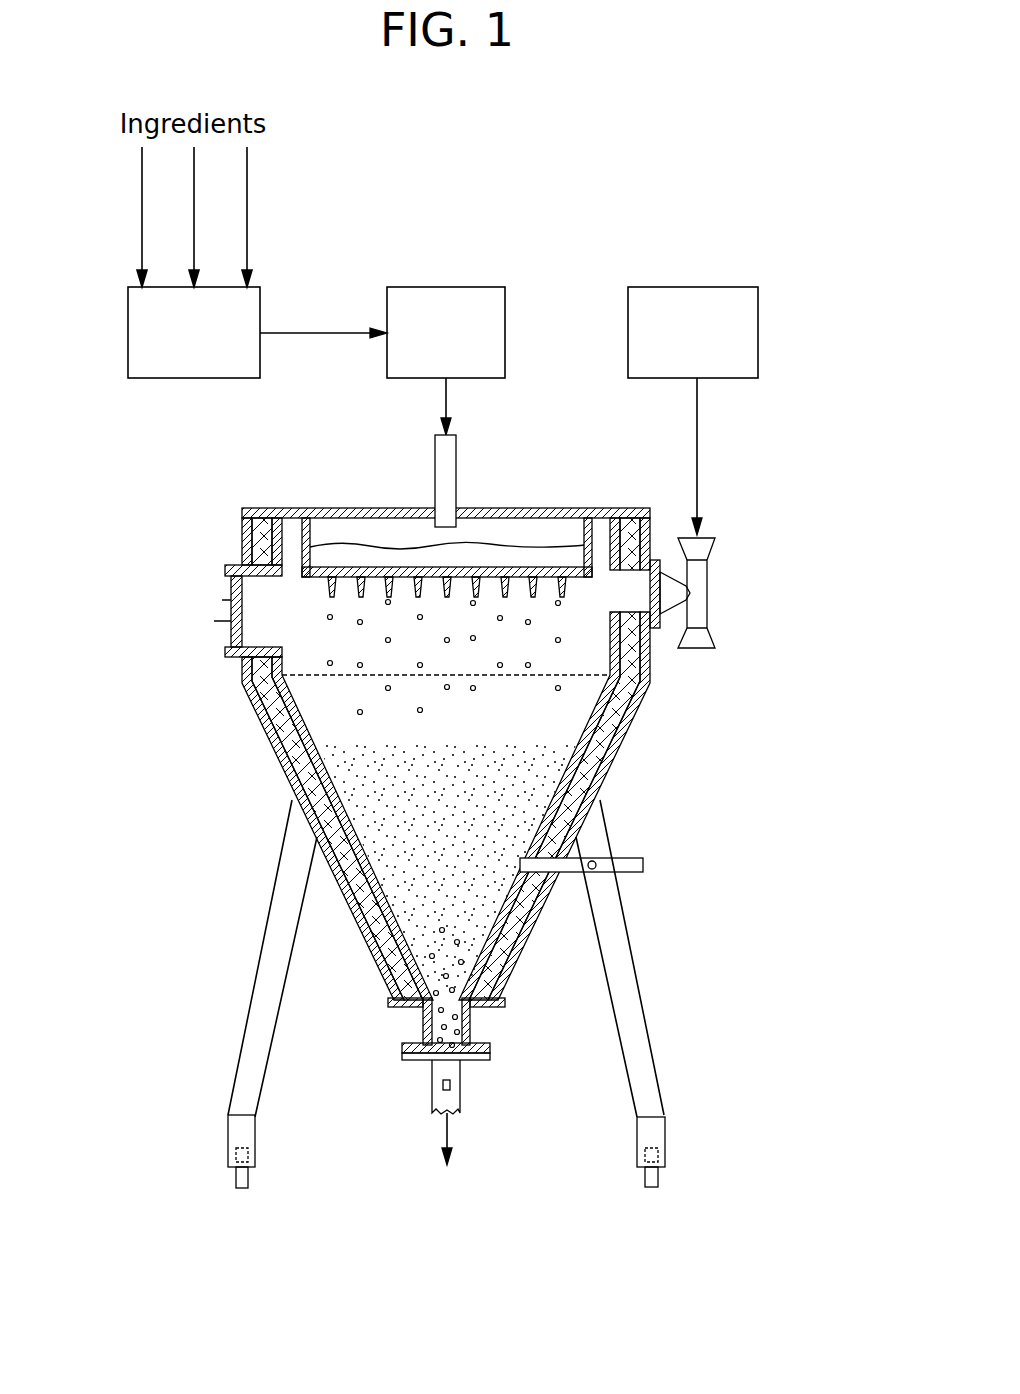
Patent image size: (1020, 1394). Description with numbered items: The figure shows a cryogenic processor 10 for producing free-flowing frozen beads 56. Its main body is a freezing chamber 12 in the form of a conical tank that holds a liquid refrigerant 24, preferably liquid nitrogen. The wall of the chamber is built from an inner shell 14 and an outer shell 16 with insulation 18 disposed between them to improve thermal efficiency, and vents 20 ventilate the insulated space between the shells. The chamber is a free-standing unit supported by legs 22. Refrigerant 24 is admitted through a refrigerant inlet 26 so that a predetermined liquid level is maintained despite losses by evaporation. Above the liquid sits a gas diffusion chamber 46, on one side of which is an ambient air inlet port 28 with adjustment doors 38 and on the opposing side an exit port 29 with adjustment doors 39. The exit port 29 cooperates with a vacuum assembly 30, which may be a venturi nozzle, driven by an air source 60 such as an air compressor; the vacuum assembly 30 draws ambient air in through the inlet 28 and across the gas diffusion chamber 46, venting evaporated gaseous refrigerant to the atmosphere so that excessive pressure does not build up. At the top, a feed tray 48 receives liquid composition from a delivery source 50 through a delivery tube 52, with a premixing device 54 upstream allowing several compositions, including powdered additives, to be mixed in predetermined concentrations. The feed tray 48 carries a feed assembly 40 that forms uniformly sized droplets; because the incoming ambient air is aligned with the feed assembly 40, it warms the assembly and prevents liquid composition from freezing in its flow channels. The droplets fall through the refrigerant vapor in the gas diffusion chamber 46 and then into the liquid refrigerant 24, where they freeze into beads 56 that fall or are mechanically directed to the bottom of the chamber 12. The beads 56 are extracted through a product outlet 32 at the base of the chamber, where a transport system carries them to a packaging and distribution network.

The cryogenic processor 10 is at (486, 888).
The freezing chamber 12 is at (468, 872).
The inner shell 14 is at (565, 772).
The outer shell 16 is at (592, 762).
The insulation 18 is at (600, 758).
The vents 20 is at (410, 1008).
The legs 22 is at (646, 1063).
The refrigerant 24 is at (450, 803).
The refrigerant inlet 26 is at (645, 864).
The ambient air inlet port 28 is at (222, 585).
The exit port 29 is at (632, 588).
The vacuum assembly 30 is at (724, 541).
The product outlet 32 is at (463, 1086).
The adjustment doors 38 is at (232, 632).
The adjustment doors 39 is at (652, 615).
The feed assembly 40 is at (529, 548).
The gas diffusion chamber 46 is at (597, 655).
The feed tray 48 is at (310, 568).
The delivery source 50 is at (432, 347).
The delivery tube 52 is at (440, 452).
The premixing device 54 is at (179, 347).
The beads 56 is at (420, 947).
The air source 60 is at (680, 347).